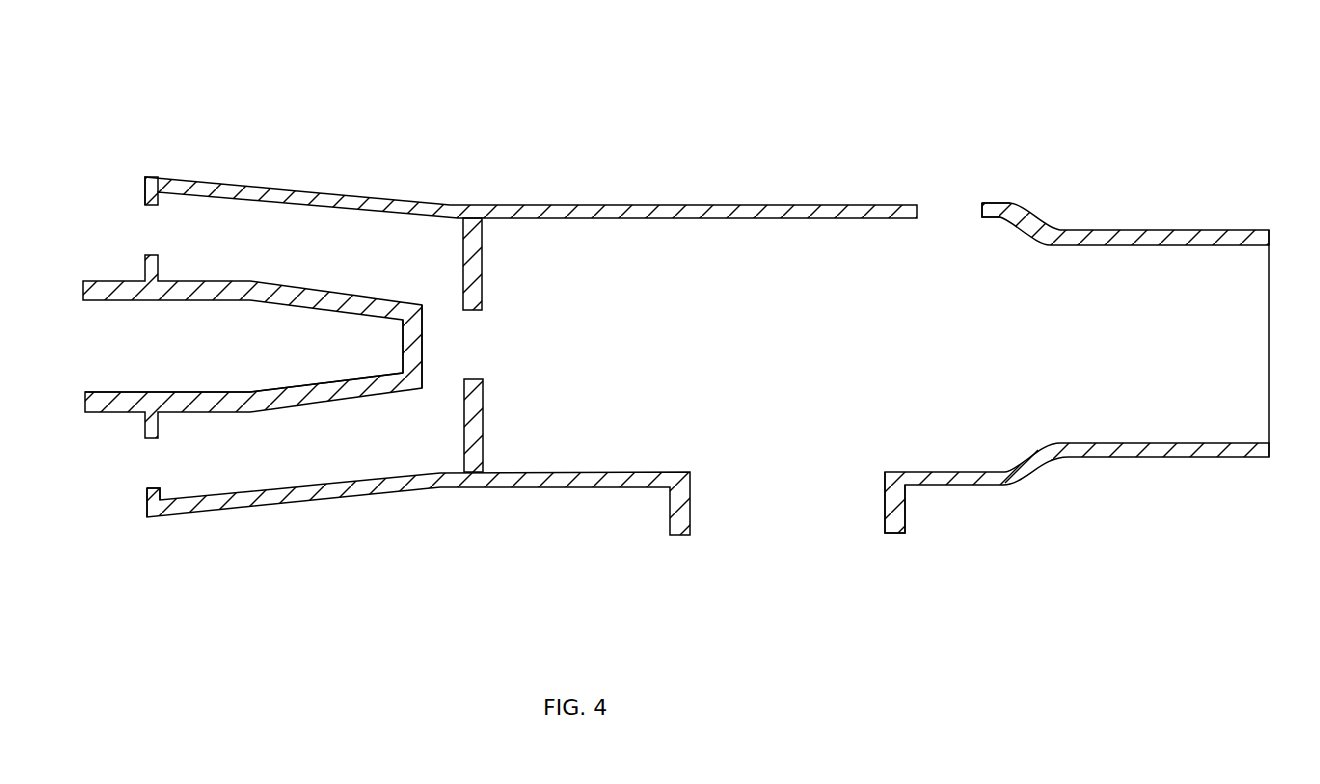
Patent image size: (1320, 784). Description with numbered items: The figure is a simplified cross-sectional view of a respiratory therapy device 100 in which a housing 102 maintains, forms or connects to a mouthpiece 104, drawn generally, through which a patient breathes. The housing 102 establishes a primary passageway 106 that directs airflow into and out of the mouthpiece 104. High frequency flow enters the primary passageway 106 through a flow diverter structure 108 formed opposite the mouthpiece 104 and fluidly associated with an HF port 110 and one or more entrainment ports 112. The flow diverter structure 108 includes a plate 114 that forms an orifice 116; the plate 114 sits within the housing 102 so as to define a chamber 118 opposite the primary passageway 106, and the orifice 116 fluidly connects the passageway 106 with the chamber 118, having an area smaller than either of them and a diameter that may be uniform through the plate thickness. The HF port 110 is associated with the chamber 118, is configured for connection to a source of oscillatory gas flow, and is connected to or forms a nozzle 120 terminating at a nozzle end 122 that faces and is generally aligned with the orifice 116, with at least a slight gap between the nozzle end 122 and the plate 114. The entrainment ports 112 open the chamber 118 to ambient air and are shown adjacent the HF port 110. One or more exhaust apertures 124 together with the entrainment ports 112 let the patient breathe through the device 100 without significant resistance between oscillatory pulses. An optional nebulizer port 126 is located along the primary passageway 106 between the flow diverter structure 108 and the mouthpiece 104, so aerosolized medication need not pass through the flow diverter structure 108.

The respiratory therapy device 100 is at (700, 42).
The housing 102 is at (705, 198).
The mouthpiece 104 is at (1234, 227).
The primary passageway 106 is at (807, 273).
The flow diverter structure 108 is at (494, 244).
The HF port 110 is at (101, 276).
The entrainment port 112 is at (152, 208).
The plate 114 is at (484, 433).
The orifice 116 is at (478, 313).
The chamber 118 is at (327, 457).
The nozzle 120 is at (267, 412).
The nozzle end 122 is at (424, 303).
The exhaust aperture 124 is at (982, 208).
The nebulizer port 126 is at (885, 530).